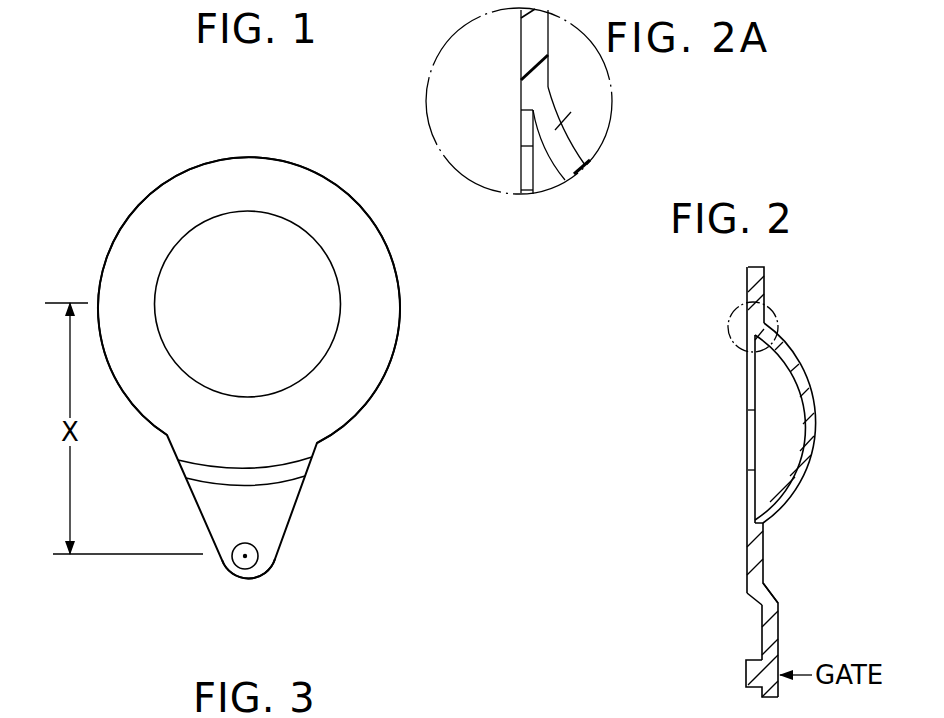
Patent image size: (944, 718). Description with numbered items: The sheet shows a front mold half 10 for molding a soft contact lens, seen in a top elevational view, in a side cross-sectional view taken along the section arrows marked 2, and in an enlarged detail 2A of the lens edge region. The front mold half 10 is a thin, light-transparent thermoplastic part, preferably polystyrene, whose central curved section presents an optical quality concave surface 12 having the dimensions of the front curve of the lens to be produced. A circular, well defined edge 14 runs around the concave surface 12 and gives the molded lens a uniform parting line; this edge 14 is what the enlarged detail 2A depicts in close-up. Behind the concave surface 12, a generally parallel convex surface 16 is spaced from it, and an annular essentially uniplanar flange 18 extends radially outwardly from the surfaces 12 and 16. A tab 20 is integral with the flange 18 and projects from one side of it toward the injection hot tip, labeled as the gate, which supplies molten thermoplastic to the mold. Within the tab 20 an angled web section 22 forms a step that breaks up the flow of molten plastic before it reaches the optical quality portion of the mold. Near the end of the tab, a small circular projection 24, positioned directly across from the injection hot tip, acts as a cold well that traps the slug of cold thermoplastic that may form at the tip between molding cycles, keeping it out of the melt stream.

In FIG. 1, the front mold half 10 is at (120, 162).
In FIG. 1, the concave surface 12 is at (313, 307).
In FIG. 2, the concave surface 12 is at (786, 472).
In FIG. 2A, the well defined edge 14 is at (521, 112).
In FIG. 2, the well defined edge 14 is at (750, 333).
In FIG. 2, the convex surface 16 is at (814, 402).
In FIG. 1, the flange 18 is at (322, 205).
In FIG. 2, the flange 18 is at (748, 288).
In FIG. 1, the tab 20 is at (258, 532).
In FIG. 2, the tab 20 is at (760, 621).
In FIG. 1, the web section 22 is at (303, 474).
In FIG. 2, the web section 22 is at (773, 591).
In FIG. 1, the circular projection 24 is at (258, 556).
In FIG. 2, the circular projection 24 is at (745, 675).
In FIG. 1, the section line 2- 2 is at (203, 102).
In FIG. 2, the detail circle 2A is at (735, 317).